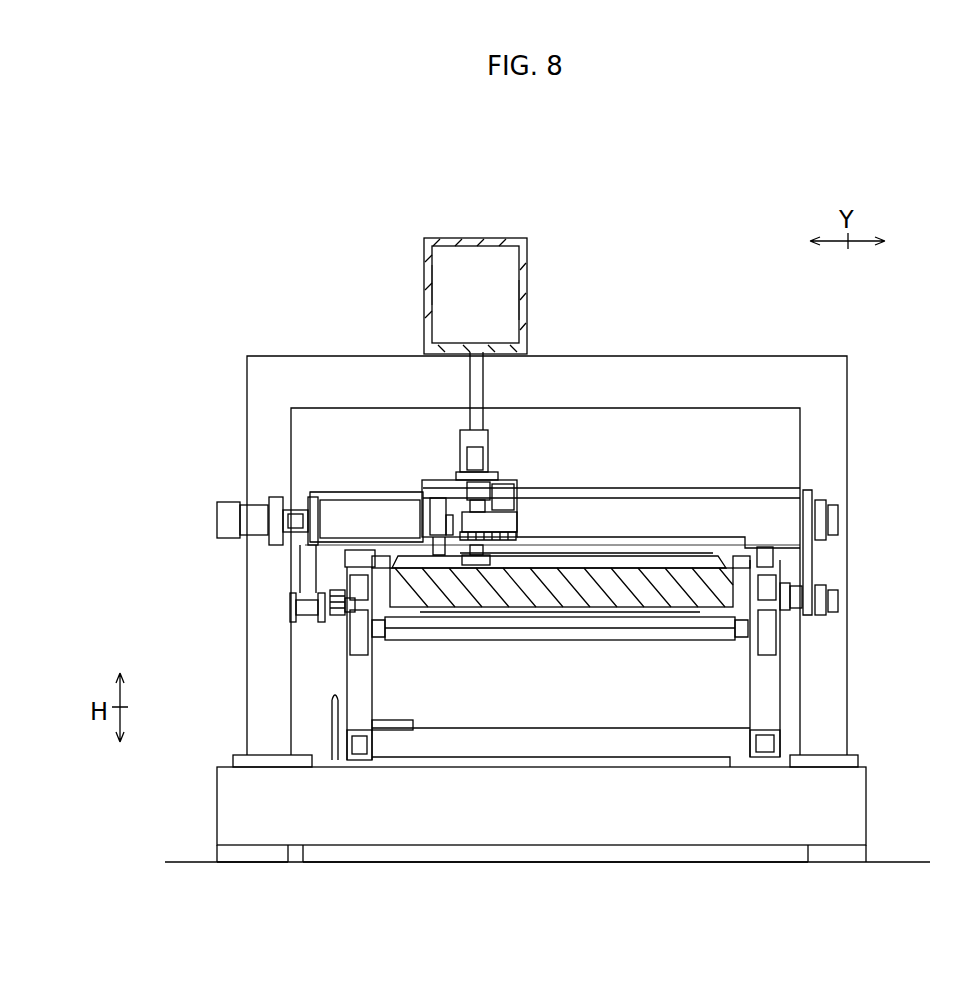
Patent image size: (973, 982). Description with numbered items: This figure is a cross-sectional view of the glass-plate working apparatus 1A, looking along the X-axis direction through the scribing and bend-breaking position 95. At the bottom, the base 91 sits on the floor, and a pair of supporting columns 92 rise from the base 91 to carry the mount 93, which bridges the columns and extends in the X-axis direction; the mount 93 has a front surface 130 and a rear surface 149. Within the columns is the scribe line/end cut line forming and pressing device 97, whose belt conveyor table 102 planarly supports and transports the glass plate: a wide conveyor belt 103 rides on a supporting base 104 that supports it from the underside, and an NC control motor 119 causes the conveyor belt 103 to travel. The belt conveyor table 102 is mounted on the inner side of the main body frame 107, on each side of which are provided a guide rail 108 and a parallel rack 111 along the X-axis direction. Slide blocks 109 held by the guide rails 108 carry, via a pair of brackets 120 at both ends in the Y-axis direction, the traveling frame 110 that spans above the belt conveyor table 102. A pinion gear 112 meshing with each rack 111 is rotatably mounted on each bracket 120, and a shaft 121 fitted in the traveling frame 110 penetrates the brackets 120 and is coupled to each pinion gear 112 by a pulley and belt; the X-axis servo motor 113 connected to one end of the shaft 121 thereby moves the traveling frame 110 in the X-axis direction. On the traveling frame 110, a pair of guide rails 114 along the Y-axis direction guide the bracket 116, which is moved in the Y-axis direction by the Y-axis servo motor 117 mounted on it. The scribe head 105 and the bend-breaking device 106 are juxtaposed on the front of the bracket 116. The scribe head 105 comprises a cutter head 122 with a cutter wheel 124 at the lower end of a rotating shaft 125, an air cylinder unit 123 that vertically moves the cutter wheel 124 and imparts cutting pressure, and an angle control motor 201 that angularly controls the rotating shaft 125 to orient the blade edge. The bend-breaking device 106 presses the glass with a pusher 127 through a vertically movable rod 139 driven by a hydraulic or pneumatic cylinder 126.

The glass-plate working apparatus 1A is at (792, 330).
The base 91 is at (228, 812).
The supporting columns 92 is at (845, 392).
The mount 93 is at (510, 262).
The scribing and bend-breaking position 95 is at (548, 450).
The scribe line/end cut line forming and pressing device 97 is at (736, 453).
The belt conveyor table 102 is at (712, 560).
The conveyor belt 103 is at (570, 570).
The supporting base 104 is at (617, 583).
The scribe head 105 is at (496, 482).
The bend-breaking device 106 is at (432, 520).
The main body frame 107 is at (357, 685).
The guide rails 108 is at (346, 588).
The slide blocks 109 is at (346, 556).
The traveling frame 110 is at (640, 508).
The rack 111 is at (328, 600).
The pinion gear 112 is at (306, 622).
The X-axis servo motor 113 is at (236, 523).
The guide rails 114 is at (580, 492).
The bracket 116 is at (448, 490).
The Y-axis servo motor 117 is at (484, 428).
The NC control motor 119 is at (378, 720).
The brackets 120 is at (296, 498).
The shaft 121 is at (276, 500).
The cutter head 122 is at (488, 542).
The air cylinder unit 123 is at (470, 445).
The cutter wheel 124 is at (468, 540).
The rotating shaft 125 is at (478, 556).
The hydraulic or pneumatic cylinder 126 is at (437, 532).
The pusher 127 is at (423, 496).
The front surface 130 is at (520, 300).
The rod 139 is at (428, 508).
The rear surface 149 is at (430, 280).
The angle control motor 201 is at (612, 556).